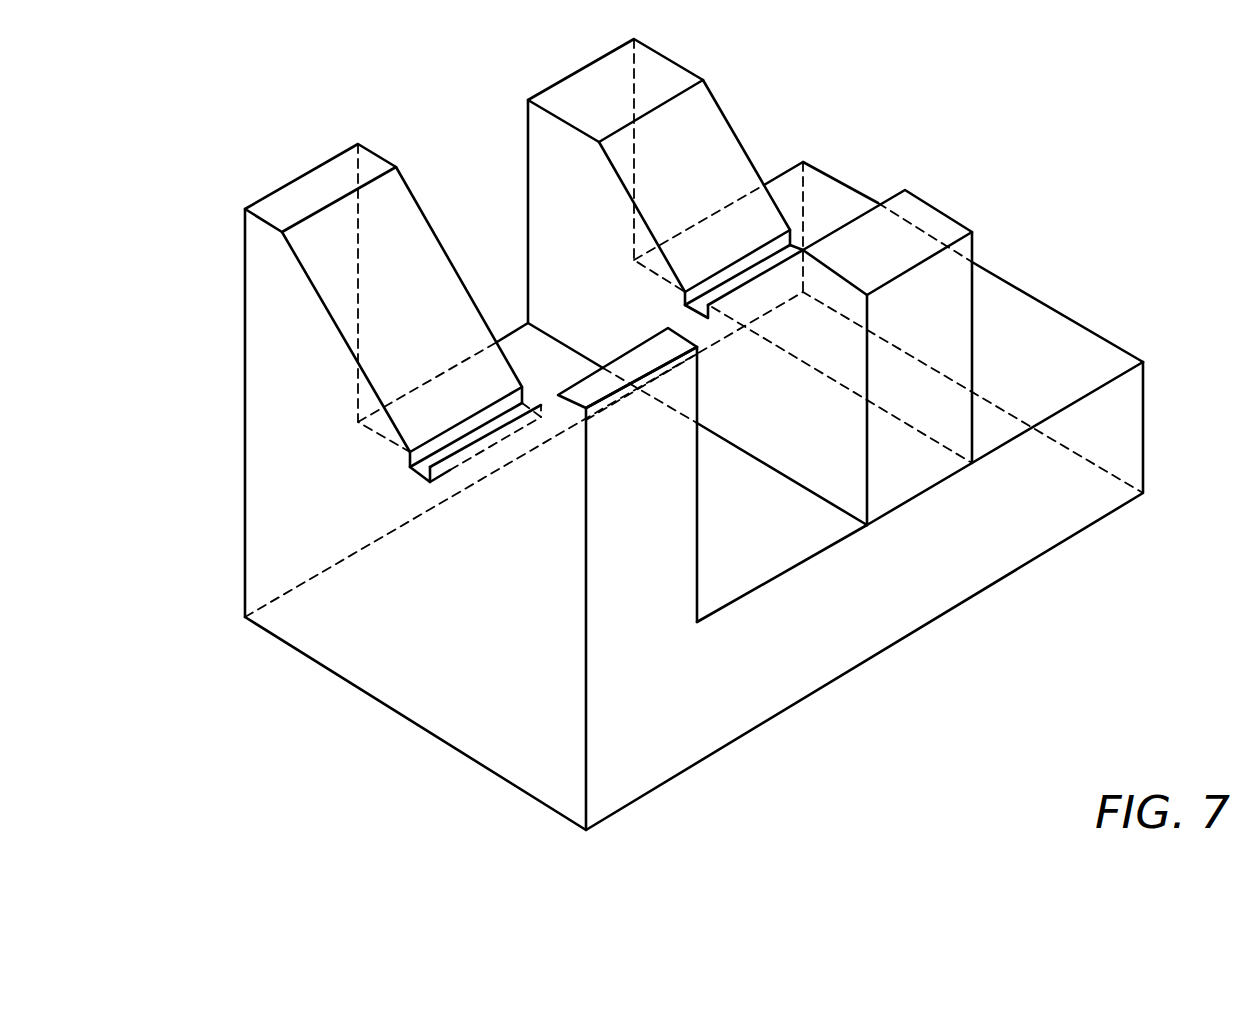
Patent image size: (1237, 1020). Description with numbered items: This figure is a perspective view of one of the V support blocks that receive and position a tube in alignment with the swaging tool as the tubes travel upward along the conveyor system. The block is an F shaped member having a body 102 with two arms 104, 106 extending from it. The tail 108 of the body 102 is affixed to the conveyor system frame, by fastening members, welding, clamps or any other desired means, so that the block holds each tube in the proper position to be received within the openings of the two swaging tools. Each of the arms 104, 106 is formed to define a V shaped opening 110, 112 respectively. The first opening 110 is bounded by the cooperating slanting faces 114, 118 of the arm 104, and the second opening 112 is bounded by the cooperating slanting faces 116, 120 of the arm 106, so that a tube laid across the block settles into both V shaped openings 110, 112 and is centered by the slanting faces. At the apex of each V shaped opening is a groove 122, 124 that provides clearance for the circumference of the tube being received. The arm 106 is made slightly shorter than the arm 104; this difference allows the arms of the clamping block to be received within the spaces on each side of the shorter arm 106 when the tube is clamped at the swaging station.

The body 102 is at (862, 615).
The arm 104 is at (627, 542).
The arm 106 is at (953, 282).
The tail 108 is at (1110, 357).
The V shaped opening 110 is at (340, 380).
The V shaped opening 112 is at (665, 199).
The slanting face 114 is at (340, 260).
The slanting face 116 is at (618, 145).
The slanting face 118 is at (627, 350).
The slanting face 120 is at (893, 191).
The groove 122 is at (421, 470).
The groove 124 is at (690, 312).